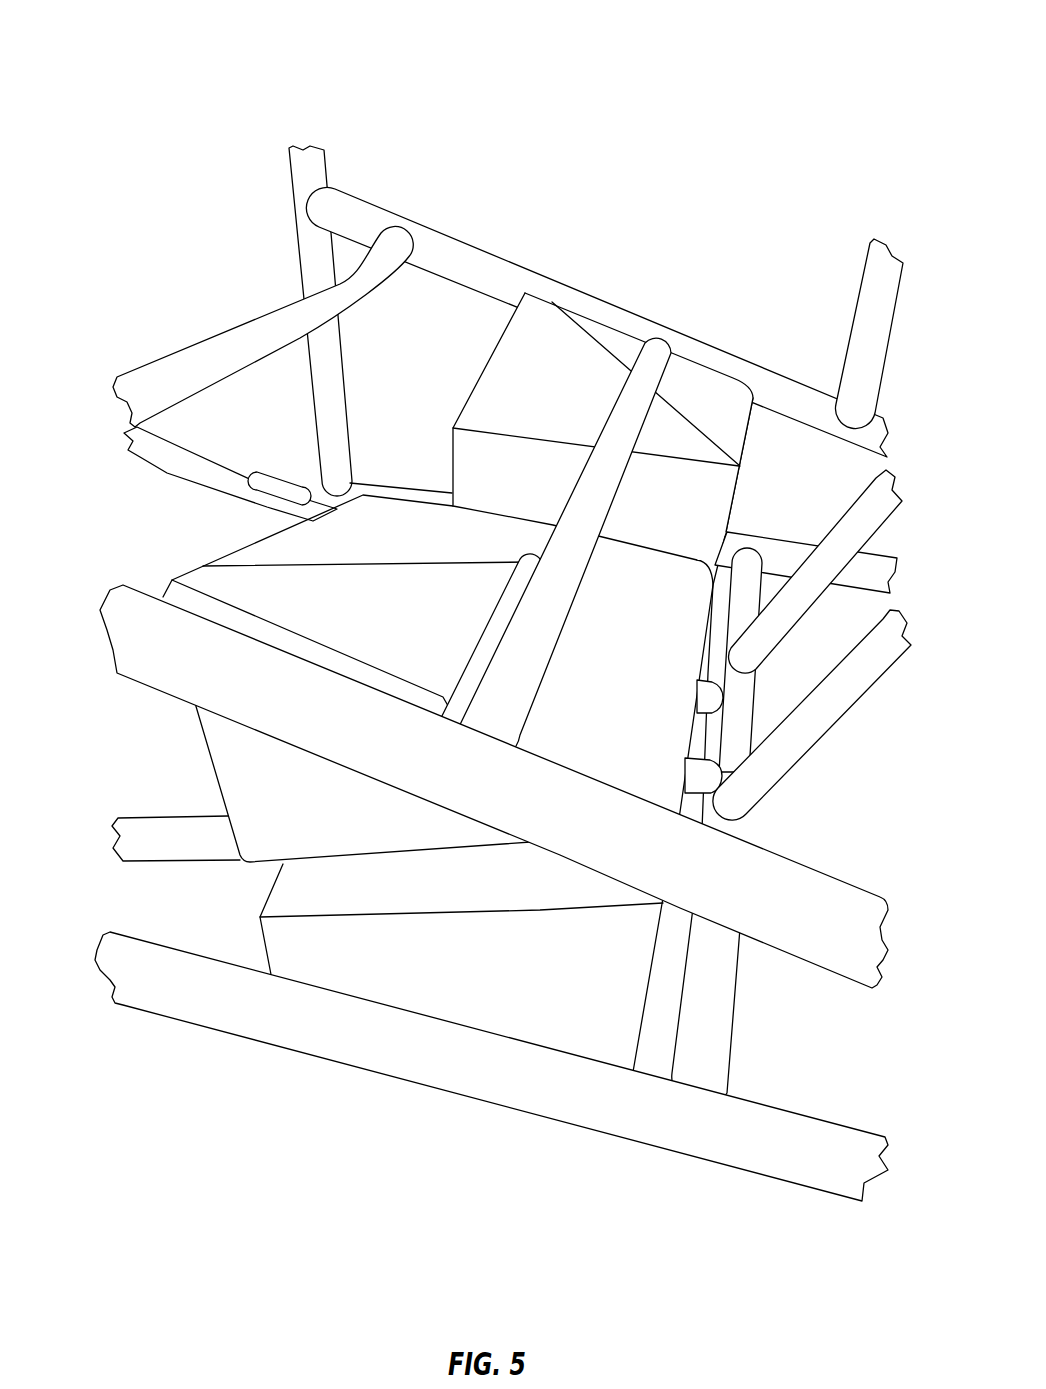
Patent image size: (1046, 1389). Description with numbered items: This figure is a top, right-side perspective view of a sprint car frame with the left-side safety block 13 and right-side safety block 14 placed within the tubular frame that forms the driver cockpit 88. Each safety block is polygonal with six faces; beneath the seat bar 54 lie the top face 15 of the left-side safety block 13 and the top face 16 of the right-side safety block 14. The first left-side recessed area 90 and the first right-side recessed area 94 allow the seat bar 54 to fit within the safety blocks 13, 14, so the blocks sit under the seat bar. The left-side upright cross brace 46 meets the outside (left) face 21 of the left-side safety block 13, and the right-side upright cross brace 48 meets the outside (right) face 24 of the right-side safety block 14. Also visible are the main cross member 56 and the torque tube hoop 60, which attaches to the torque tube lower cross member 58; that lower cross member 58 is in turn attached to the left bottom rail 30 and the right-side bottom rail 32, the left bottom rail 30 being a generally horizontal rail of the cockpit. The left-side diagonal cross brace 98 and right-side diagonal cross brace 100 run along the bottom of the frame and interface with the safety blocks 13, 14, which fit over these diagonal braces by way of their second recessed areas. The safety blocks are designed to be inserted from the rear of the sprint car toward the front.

The driver cockpit 88 is at (504, 46).
The left-side safety block 13 is at (553, 305).
The right-side safety block 14 is at (650, 590).
The top face 15 is at (548, 398).
The outside (left) face 21 is at (516, 491).
The top face 16 is at (589, 762).
The outside (right) face 24 is at (309, 818).
The left bottom rail 30 is at (330, 478).
The right-side bottom rail 32 is at (331, 1050).
The left-side upright cross brace 46 is at (445, 250).
The right-side upright cross brace 48 is at (173, 627).
The seat bar 54 is at (667, 345).
The main cross member 56 is at (262, 318).
The torque tube lower cross member 58 is at (718, 990).
The torque tube hoop 60 is at (860, 527).
The first left-side recessed area 90 is at (672, 368).
The first right-side recessed area 94 is at (467, 663).
The left-side diagonal cross brace 98 is at (277, 485).
The right-side diagonal cross brace 100 is at (153, 830).